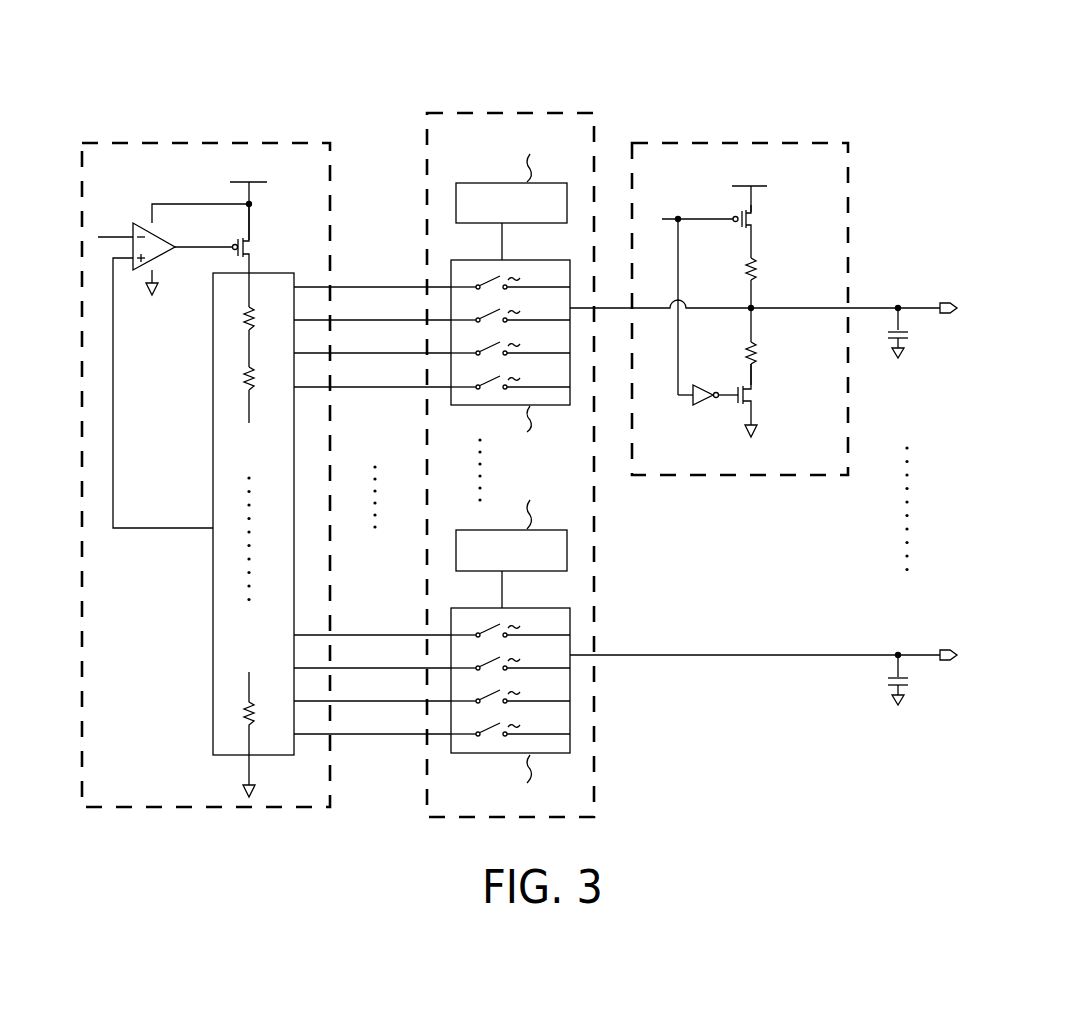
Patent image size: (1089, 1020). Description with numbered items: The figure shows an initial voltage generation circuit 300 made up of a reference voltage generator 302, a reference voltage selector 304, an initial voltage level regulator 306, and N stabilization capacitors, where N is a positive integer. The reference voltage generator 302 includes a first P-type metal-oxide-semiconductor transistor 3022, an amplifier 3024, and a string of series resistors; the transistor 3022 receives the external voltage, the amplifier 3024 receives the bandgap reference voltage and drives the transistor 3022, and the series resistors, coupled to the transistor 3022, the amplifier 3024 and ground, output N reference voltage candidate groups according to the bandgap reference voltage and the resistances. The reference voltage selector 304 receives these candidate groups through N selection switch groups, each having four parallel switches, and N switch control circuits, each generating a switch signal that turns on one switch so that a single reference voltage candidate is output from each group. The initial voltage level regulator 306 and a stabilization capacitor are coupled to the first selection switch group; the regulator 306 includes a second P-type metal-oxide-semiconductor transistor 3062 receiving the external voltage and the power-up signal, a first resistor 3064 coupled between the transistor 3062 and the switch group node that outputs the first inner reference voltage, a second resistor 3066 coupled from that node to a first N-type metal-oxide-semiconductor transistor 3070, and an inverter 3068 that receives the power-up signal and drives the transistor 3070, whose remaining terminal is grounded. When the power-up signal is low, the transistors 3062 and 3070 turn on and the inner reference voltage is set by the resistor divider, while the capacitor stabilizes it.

The initial voltage generation circuit 300 is at (978, 95).
The reference voltage generator 302 is at (185, 140).
The reference voltage selector 304 is at (507, 112).
The initial voltage level regulator 306 is at (737, 140).
The first P-type metal-oxide-semiconductor transistor 3022 is at (254, 249).
The amplifier 3024 is at (161, 246).
The second P-type metal-oxide-semiconductor transistor 3062 is at (755, 222).
The first resistor 3064 is at (737, 272).
The second resistor 3066 is at (737, 357).
The inverter 3068 is at (690, 404).
The first N-type metal-oxide-semiconductor transistor 3070 is at (755, 400).